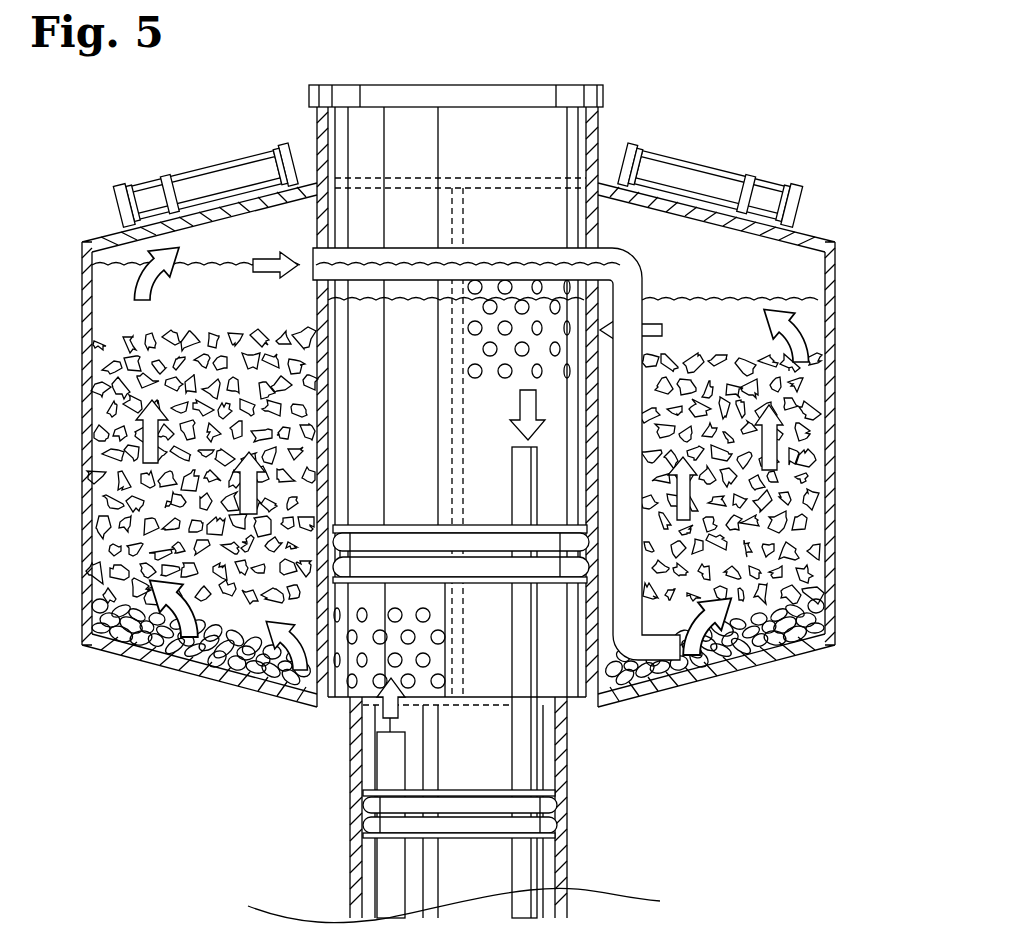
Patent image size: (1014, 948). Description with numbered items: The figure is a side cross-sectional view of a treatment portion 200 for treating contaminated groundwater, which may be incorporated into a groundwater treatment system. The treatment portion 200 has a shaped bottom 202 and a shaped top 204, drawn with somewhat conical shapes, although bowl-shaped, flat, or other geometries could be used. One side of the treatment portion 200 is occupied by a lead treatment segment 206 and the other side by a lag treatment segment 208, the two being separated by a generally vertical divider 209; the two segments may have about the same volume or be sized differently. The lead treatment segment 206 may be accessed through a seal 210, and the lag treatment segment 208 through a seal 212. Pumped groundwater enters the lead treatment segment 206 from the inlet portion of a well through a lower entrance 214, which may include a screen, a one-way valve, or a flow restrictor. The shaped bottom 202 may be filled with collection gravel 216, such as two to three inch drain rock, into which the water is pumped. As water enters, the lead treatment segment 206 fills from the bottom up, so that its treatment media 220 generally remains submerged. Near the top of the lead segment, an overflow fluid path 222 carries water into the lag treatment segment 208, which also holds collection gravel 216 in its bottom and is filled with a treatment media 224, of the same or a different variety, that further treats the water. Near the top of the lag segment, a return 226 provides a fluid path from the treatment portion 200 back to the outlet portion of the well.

The treatment portion 200 is at (463, 503).
The shaped bottom 202 is at (233, 683).
The shaped top 204 is at (90, 243).
The lead treatment segment 206 is at (76, 498).
The lag treatment segment 208 is at (842, 494).
The vertical divider 209 is at (446, 500).
The seal 210 is at (222, 148).
The seal 212 is at (682, 146).
The lower entrance 214 is at (328, 634).
The collection gravel 216 is at (207, 636).
The treatment media 220 is at (126, 343).
The overflow fluid path 222 is at (425, 246).
The treatment media 224 is at (692, 345).
The return 226 is at (486, 336).